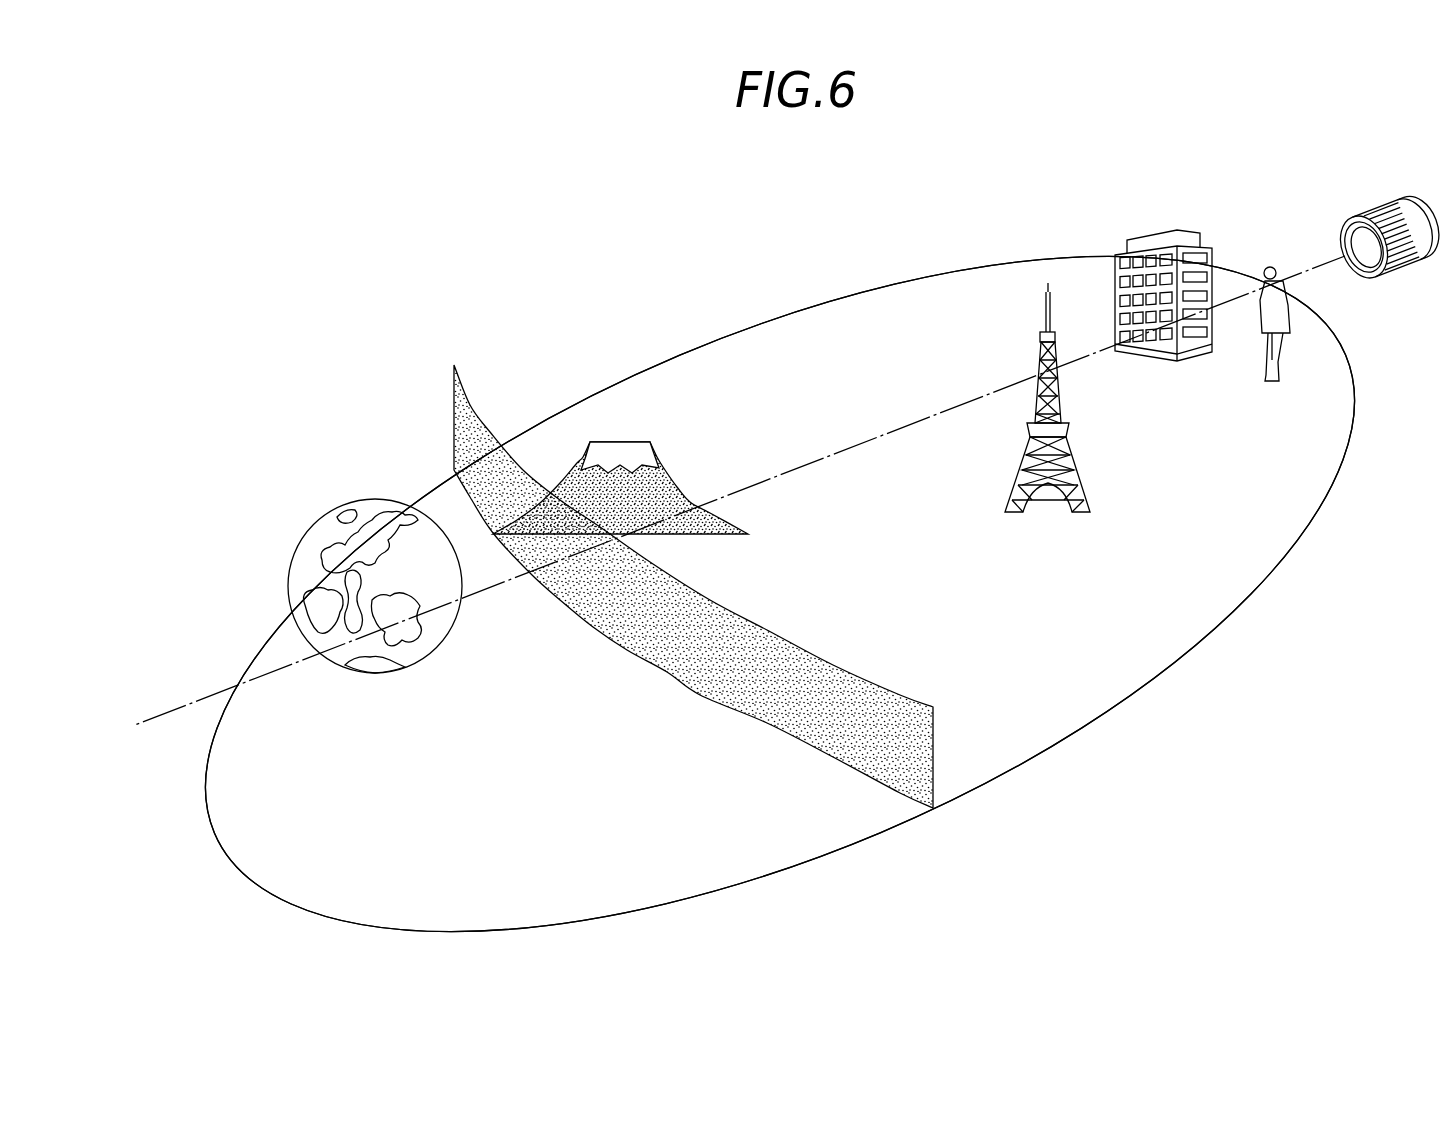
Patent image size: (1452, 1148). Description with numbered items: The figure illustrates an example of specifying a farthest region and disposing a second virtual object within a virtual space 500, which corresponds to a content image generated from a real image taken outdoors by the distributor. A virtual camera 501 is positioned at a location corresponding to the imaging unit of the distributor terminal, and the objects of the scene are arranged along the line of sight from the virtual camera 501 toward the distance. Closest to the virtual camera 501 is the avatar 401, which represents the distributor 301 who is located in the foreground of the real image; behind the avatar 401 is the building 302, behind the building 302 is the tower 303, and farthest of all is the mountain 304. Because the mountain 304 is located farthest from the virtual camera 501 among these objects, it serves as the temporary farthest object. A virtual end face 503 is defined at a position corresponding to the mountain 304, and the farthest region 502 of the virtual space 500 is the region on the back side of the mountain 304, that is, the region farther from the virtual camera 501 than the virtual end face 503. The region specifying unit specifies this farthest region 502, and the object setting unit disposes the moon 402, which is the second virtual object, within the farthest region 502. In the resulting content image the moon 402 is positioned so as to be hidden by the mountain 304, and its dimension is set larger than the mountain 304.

The building 302 is at (1155, 230).
The tower 303 is at (1082, 455).
The mountain 304 is at (624, 438).
The avatar 401 is at (1252, 367).
The distributor 301 is at (1263, 357).
The moon 402 is at (372, 677).
The virtual space 500 is at (1264, 636).
The virtual camera 501 is at (1413, 206).
The farthest region 502 is at (602, 784).
The virtual end face 503 is at (897, 732).